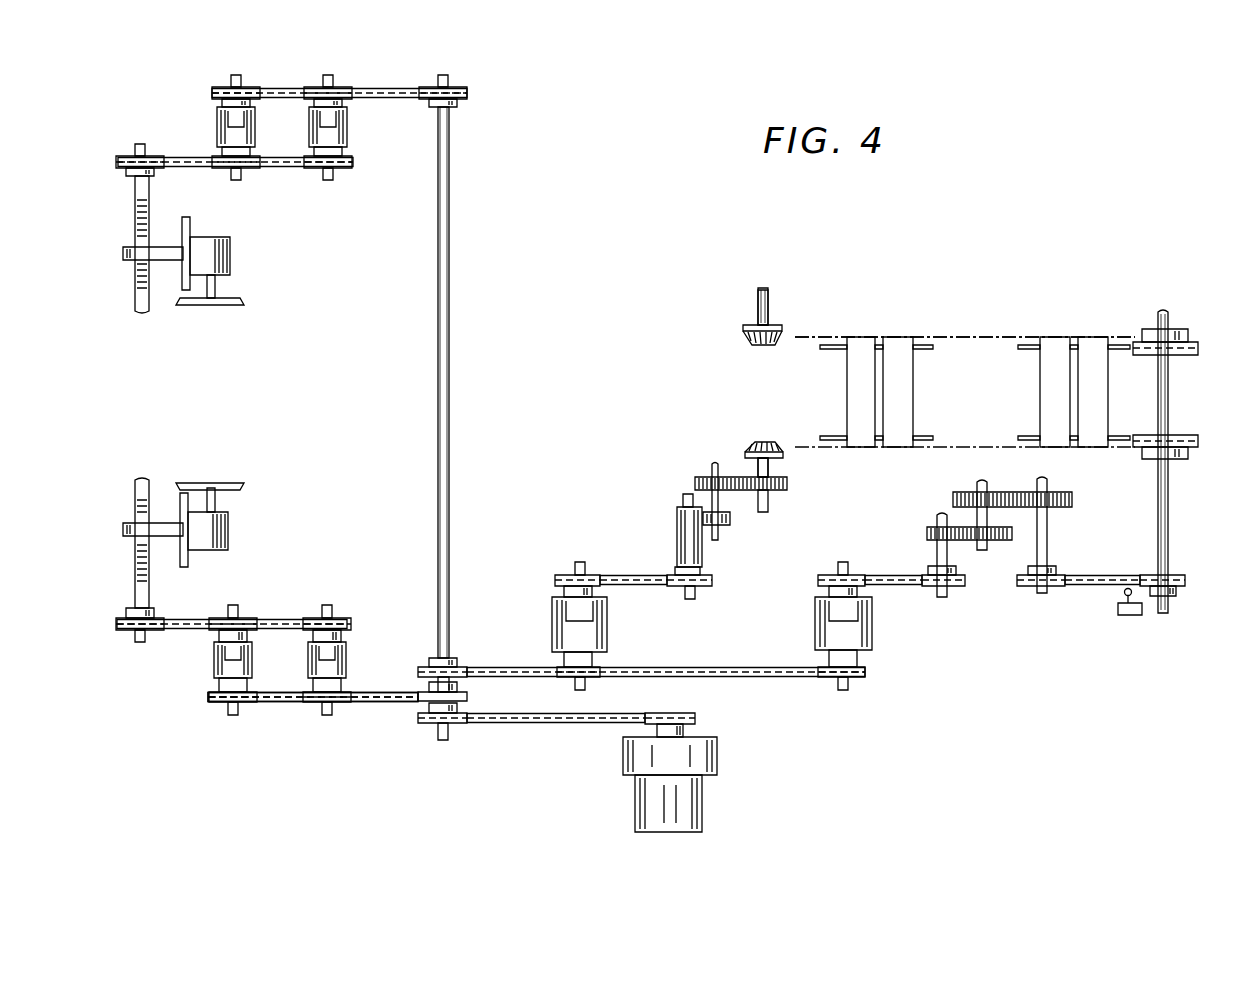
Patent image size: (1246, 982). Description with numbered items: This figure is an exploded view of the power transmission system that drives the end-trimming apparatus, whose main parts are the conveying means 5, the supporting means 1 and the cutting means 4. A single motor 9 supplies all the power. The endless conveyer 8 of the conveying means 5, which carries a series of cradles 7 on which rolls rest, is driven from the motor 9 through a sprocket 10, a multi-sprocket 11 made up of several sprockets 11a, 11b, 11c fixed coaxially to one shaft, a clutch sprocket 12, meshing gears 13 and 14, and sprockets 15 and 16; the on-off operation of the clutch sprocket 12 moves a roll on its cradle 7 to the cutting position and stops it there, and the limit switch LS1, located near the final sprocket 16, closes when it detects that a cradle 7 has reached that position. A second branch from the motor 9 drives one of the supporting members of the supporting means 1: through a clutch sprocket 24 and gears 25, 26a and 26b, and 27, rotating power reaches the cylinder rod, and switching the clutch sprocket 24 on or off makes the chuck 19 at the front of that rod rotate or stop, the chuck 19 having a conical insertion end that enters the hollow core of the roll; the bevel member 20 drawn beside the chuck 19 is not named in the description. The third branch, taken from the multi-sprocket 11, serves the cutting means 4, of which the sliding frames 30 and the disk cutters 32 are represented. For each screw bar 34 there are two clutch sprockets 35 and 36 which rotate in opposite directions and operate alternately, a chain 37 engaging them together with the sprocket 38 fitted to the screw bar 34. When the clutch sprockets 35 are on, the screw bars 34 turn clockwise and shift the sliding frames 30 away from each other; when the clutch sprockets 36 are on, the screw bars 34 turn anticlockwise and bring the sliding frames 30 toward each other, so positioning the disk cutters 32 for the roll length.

The supporting means 1 is at (640, 370).
The cutting means 4 is at (272, 397).
The conveying means 5 is at (1028, 288).
The cradle 7 is at (861, 440).
The endless conveyer 8 is at (973, 335).
The motor 9 is at (623, 753).
The sprocket 10 is at (696, 723).
The multi-sprocket 11 is at (467, 697).
The sprocket 11a is at (452, 85).
The sprocket 11b is at (420, 702).
The sprocket 11c is at (418, 672).
The clutch sprocket 12 is at (870, 645).
The gear 13 is at (927, 533).
The gear 14 is at (954, 498).
The sprocket 15 is at (1058, 580).
The sprocket 16 is at (1185, 582).
The chuck 19 is at (742, 332).
The bevel gear 20 is at (779, 345).
The clutch sprocket 24 is at (552, 622).
The gear 25 is at (677, 530).
The gear 26a is at (718, 528).
The gear 26b is at (700, 478).
The gear 27 is at (787, 484).
The sliding frame 30 is at (188, 226).
The disk cutter 32 is at (238, 300).
The screw bar 34 is at (134, 284).
The clutch sprocket 35 is at (350, 130).
The clutch sprocket 36 is at (216, 127).
The chain 37 is at (279, 620).
The sprocket 38 is at (126, 155).
The limit switch LS1 is at (1112, 608).